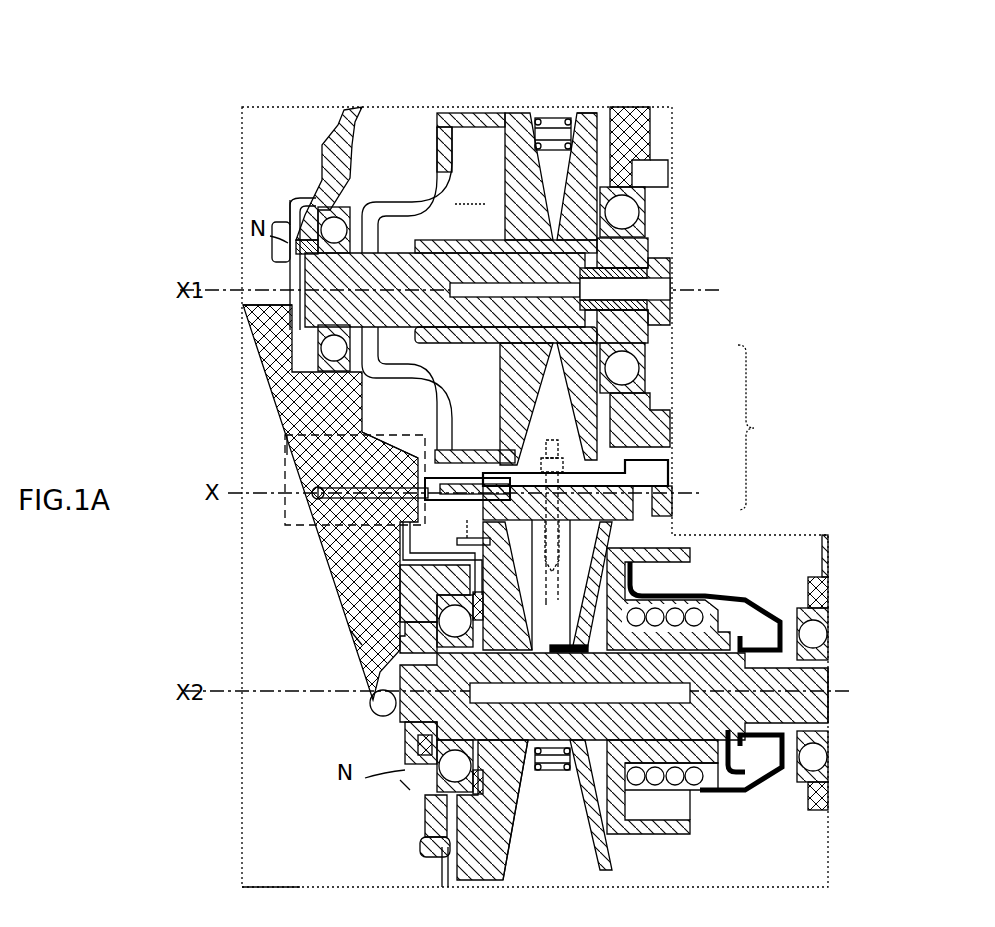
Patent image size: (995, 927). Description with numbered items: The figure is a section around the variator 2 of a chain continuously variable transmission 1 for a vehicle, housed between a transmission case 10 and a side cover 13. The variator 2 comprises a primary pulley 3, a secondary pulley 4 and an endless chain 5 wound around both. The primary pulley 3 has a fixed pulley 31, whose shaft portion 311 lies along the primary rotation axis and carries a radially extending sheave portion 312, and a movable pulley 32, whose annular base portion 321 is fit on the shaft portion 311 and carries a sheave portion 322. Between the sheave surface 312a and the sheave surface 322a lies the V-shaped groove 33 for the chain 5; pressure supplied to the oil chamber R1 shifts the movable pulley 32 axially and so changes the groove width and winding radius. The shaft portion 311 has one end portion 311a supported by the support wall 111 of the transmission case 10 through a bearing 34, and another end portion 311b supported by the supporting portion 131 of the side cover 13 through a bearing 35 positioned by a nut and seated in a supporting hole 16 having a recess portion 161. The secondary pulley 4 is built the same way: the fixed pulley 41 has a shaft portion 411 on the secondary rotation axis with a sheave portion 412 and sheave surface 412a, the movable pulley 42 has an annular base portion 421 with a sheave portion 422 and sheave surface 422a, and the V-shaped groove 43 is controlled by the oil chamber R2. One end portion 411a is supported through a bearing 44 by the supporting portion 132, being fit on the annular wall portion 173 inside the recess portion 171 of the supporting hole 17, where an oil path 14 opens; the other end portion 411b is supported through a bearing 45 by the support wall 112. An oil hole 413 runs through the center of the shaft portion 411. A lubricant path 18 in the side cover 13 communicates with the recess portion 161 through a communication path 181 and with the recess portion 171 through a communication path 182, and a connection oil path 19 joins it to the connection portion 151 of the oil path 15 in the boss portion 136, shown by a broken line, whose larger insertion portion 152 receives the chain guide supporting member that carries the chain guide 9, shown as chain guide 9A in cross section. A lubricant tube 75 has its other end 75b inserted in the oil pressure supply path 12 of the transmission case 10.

The chain continuously variable transmission 1 is at (284, 792).
The variator 2 is at (762, 427).
The primary pulley 3 is at (655, 345).
The secondary pulley 4 is at (640, 520).
The chain 5 is at (650, 380).
The chain guide 9 is at (551, 545).
The chain guide 9A is at (574, 763).
The transmission case 10 is at (672, 118).
The oil pressure supply path 12 is at (672, 482).
The side cover 13 is at (332, 132).
The oil path 14 is at (372, 705).
The oil path 15 is at (271, 906).
The supporting hole 16 is at (340, 207).
The supporting hole 17 is at (469, 528).
The lubricant path 18 is at (348, 602).
The connection oil path 19 is at (312, 492).
The fixed pulley 31 is at (600, 112).
The movable pulley 32 is at (513, 112).
The V-shaped groove 33 is at (562, 170).
The bearing 34 is at (645, 212).
The bearing 35 is at (487, 290).
The fixed pulley 41 is at (490, 865).
The movable pulley 42 is at (625, 870).
The V-shaped groove 43 is at (536, 868).
The bearing 44 is at (425, 810).
The bearing 45 is at (808, 792).
The lubricant tube 75 is at (575, 468).
The other end 75b is at (650, 455).
The support wall 111 is at (650, 172).
The support wall 112 is at (818, 828).
The supporting portion 131 is at (298, 212).
The supporting portion 132 is at (405, 780).
The boss portion 136 is at (290, 530).
The connection portion 151 is at (397, 480).
The insertion portion 152 is at (442, 558).
The recess portion 161 is at (305, 222).
The recess portion 171 is at (441, 593).
The annular wall portion 173 is at (488, 760).
The communication path 181 is at (248, 352).
The communication path 182 is at (358, 636).
The shaft portion 311 is at (445, 345).
The one end portion 311a is at (672, 250).
The other end portion 311b is at (290, 262).
The sheave portion 312 is at (625, 110).
The sheave surface 312a is at (556, 113).
The annular base portion 321 is at (440, 208).
The sheave portion 322 is at (465, 113).
The sheave surface 322a is at (506, 241).
The shaft portion 411 is at (548, 780).
The one end portion 411a is at (378, 672).
The other end portion 411b is at (832, 673).
The sheave portion 412 is at (515, 835).
The sheave surface 412a is at (432, 852).
The oil hole 413 is at (504, 588).
The annular base portion 421 is at (706, 676).
The sheave portion 422 is at (657, 691).
The sheave surface 422a is at (612, 850).
The oil chamber R1 is at (471, 191).
The oil chamber R2 is at (664, 815).